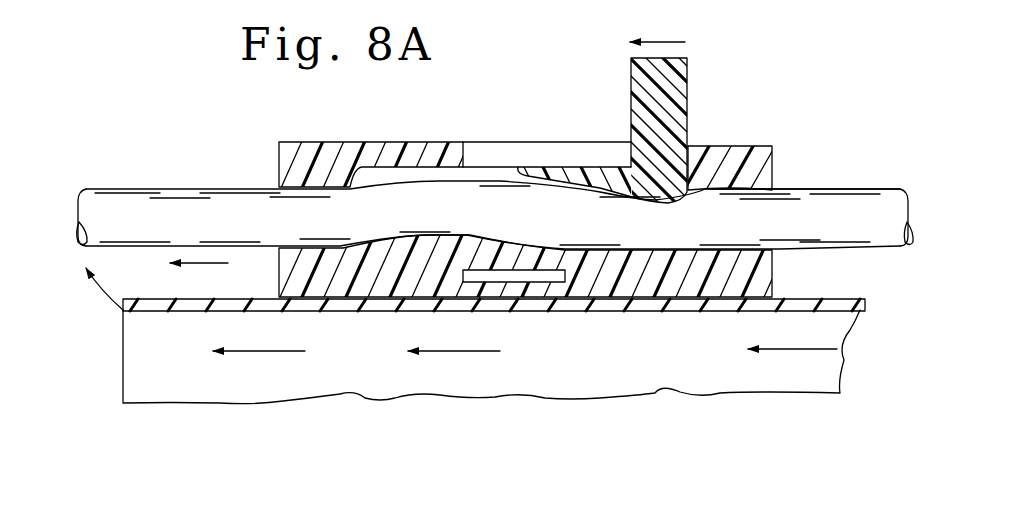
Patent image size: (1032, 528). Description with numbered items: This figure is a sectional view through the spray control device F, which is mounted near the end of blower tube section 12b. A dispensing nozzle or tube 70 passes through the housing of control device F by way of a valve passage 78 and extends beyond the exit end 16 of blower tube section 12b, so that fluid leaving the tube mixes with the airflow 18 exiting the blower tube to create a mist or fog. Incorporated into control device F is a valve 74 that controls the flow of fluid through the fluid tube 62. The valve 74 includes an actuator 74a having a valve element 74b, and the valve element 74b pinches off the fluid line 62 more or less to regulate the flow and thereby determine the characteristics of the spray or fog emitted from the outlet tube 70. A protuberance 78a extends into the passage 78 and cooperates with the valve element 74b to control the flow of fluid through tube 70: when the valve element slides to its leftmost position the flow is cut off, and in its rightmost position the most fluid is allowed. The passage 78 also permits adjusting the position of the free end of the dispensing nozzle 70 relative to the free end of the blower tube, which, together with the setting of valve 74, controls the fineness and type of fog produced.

The dispensing nozzle or tube 70 is at (205, 188).
The control device F is at (325, 140).
The protuberance 78a is at (452, 235).
The valve 74 is at (505, 176).
The actuator 74a is at (688, 93).
The valve passage 78 is at (703, 195).
The fluid tube 62 is at (805, 188).
The exit end 16 is at (106, 283).
The blower tube section 12b is at (800, 299).
The valve element 74b is at (612, 192).
The airflow 18 is at (275, 351).